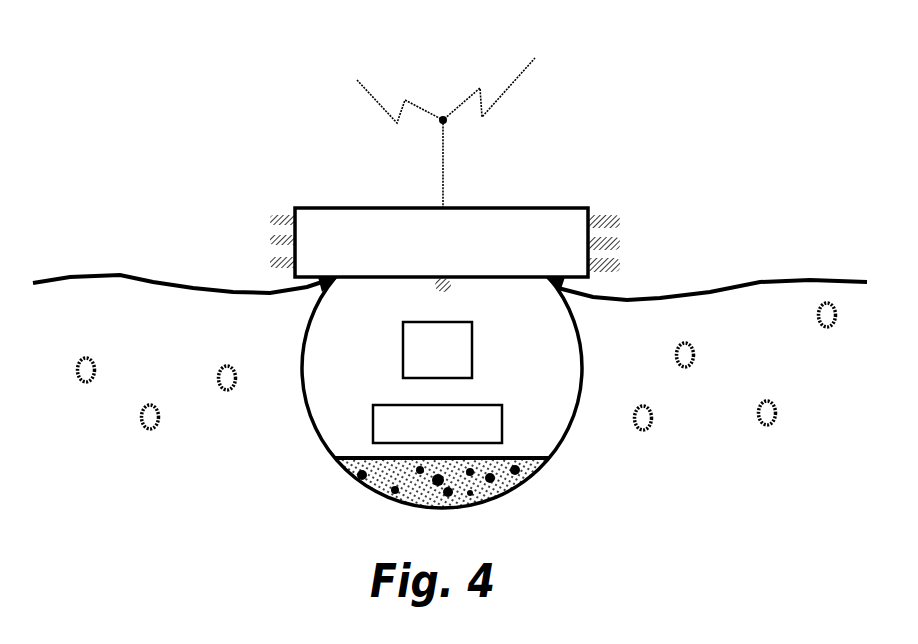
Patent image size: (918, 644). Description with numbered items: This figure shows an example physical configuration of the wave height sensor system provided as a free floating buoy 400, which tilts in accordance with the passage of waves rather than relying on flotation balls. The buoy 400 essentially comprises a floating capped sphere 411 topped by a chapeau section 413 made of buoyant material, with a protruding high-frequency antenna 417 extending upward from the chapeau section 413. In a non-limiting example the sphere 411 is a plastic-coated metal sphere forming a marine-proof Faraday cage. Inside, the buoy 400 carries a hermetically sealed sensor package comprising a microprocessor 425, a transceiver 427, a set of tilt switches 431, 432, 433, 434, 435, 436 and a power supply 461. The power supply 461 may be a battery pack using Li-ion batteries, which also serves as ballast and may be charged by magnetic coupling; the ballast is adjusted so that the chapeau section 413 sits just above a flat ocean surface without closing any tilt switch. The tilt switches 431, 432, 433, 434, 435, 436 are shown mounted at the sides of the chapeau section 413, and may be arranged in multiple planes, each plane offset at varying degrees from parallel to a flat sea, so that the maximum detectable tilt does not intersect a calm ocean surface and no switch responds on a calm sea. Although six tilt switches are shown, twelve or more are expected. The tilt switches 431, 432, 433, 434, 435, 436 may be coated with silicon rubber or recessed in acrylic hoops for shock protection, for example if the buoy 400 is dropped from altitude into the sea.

The free floating buoy 400 is at (176, 151).
The floating capped sphere 411 is at (323, 443).
The chapeau section 413 is at (344, 208).
The high-frequency antenna 417 is at (442, 163).
The microprocessor 425 is at (460, 439).
The transceiver 427 is at (460, 354).
The tilt switch 431 is at (278, 215).
The tilt switch 432 is at (271, 246).
The tilt switch 433 is at (270, 266).
The tilt switch 434 is at (608, 215).
The tilt switch 435 is at (617, 241).
The tilt switch 436 is at (618, 260).
The power supply 461 is at (380, 487).